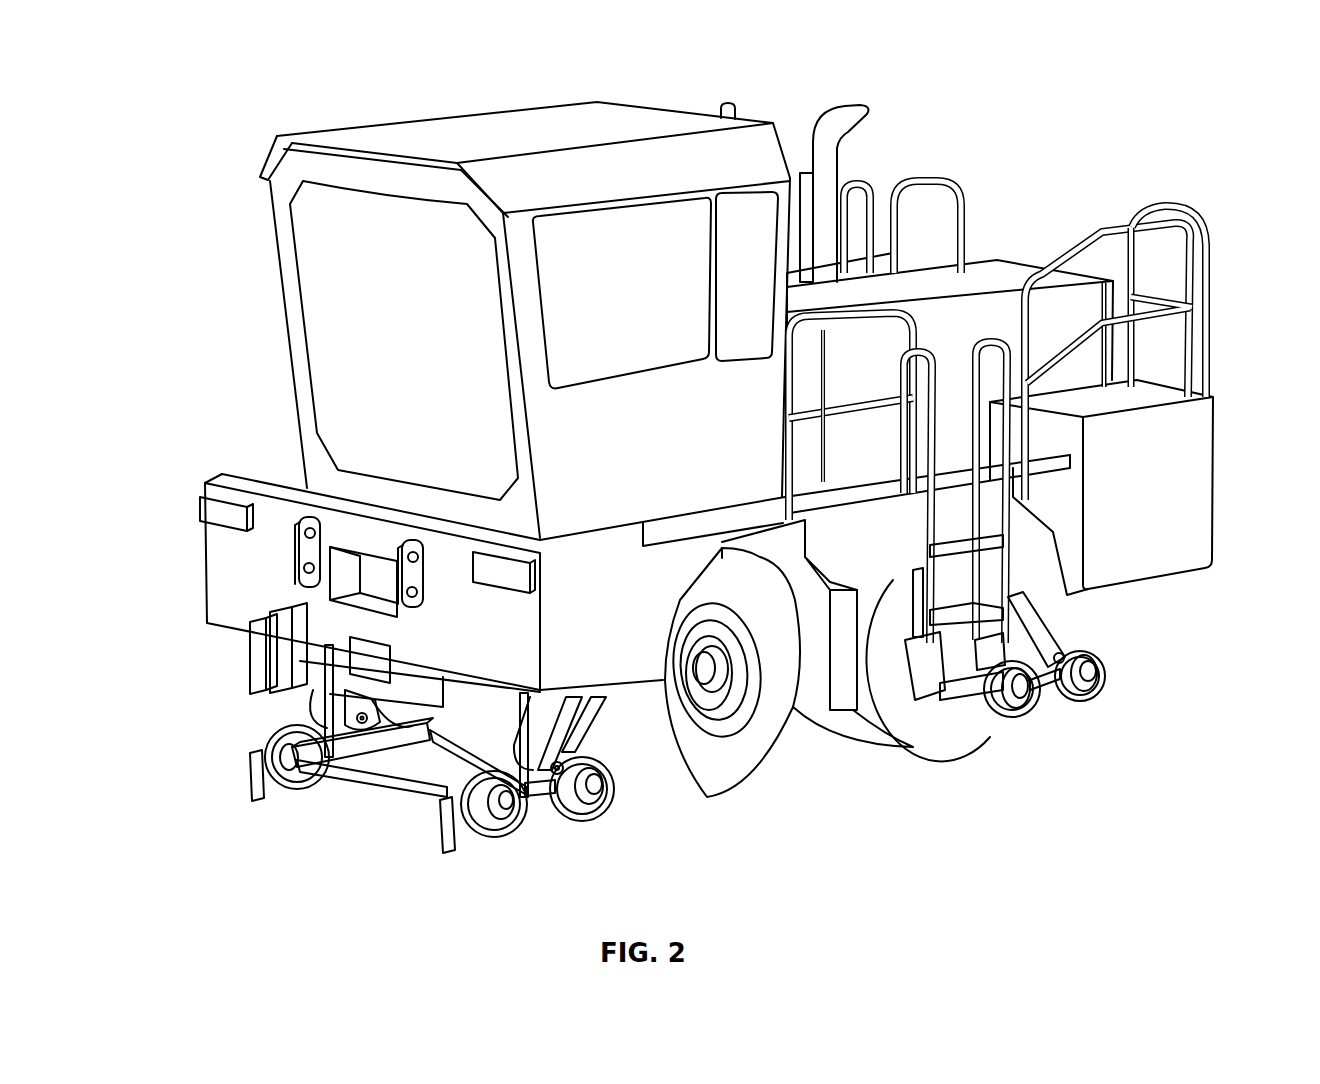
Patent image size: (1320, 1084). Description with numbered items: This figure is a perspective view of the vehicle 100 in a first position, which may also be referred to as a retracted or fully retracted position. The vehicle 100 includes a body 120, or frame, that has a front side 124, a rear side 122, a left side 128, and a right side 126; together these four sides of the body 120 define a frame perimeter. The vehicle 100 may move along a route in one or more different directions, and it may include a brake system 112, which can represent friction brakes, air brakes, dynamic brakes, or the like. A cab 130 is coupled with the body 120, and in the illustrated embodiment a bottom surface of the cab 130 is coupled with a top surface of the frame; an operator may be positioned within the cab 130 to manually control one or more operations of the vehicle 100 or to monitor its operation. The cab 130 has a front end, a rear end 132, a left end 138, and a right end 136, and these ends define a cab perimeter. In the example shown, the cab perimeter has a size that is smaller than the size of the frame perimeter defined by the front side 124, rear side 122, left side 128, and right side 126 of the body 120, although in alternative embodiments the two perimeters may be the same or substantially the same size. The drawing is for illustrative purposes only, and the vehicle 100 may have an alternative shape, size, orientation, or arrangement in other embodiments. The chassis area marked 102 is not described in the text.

The vehicle 100 is at (1162, 83).
The chassis 102 is at (787, 713).
The brake system 112 is at (465, 664).
The body 120 is at (183, 662).
The rear side 122 is at (1222, 488).
The front side 124 is at (230, 557).
The right side 126 is at (222, 483).
The left side 128 is at (630, 652).
The cab 130 is at (273, 90).
The rear end 132 is at (783, 228).
The right end 136 is at (273, 288).
The left end 138 is at (733, 457).